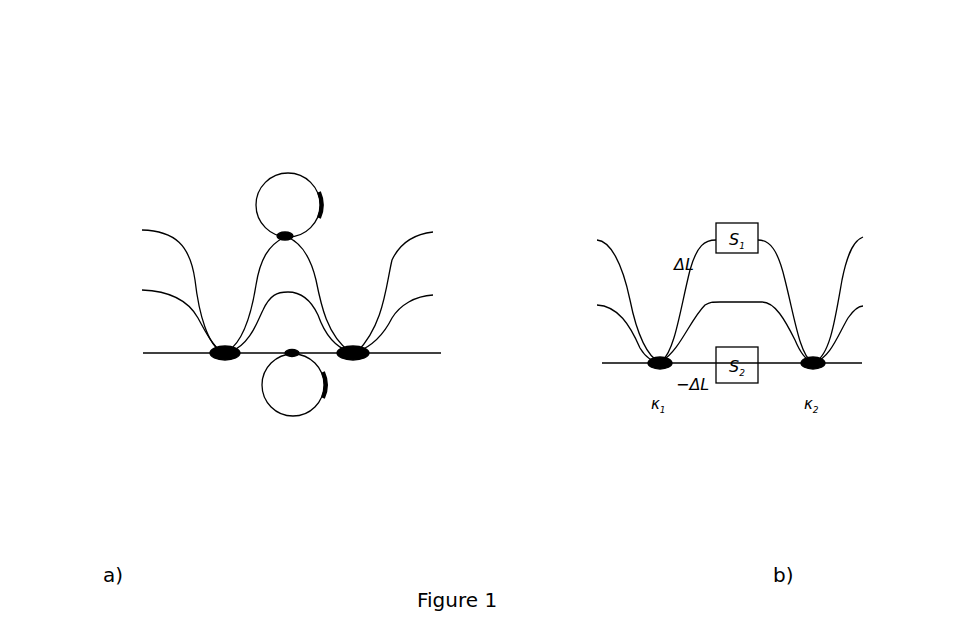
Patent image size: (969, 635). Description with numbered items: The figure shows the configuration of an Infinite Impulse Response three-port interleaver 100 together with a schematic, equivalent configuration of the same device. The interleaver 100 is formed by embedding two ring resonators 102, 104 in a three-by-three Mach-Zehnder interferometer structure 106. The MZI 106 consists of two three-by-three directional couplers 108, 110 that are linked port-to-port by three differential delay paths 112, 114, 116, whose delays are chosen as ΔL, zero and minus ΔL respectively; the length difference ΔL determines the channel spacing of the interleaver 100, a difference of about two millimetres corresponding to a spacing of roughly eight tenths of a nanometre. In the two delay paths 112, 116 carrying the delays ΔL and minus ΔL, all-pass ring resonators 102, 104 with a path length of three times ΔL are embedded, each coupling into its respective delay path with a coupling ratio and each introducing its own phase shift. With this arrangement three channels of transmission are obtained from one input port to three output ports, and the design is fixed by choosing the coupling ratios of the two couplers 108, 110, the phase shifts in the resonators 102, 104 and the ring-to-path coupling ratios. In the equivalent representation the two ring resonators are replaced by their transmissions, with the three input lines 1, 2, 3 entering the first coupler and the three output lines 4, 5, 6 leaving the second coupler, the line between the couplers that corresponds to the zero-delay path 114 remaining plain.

In FIG. 1a, the interleaver 100 is at (188, 208).
In FIG. 1a, the ring resonator 102 is at (262, 403).
In FIG. 1a, the ring resonator 104 is at (305, 168).
In FIG. 1a, the Mach-Zehnder interferometer structure 106 is at (280, 270).
In FIG. 1a, the directional coupler 108 is at (225, 342).
In FIG. 1a, the directional coupler 110 is at (352, 337).
In FIG. 1a, the differential delay path 112 is at (331, 365).
In FIG. 1a, the differential delay path 114 is at (312, 292).
In FIG. 1a, the differential delay path 116 is at (310, 243).
In FIG. 1b, the first input waveguide 1 is at (618, 297).
In FIG. 1b, the second input waveguide 2 is at (618, 326).
In FIG. 1b, the third input waveguide 3 is at (719, 359).
In FIG. 1b, the first output waveguide 4 is at (849, 294).
In FIG. 1b, the second output waveguide 5 is at (849, 324).
In FIG. 1b, the third output waveguide 6 is at (842, 359).